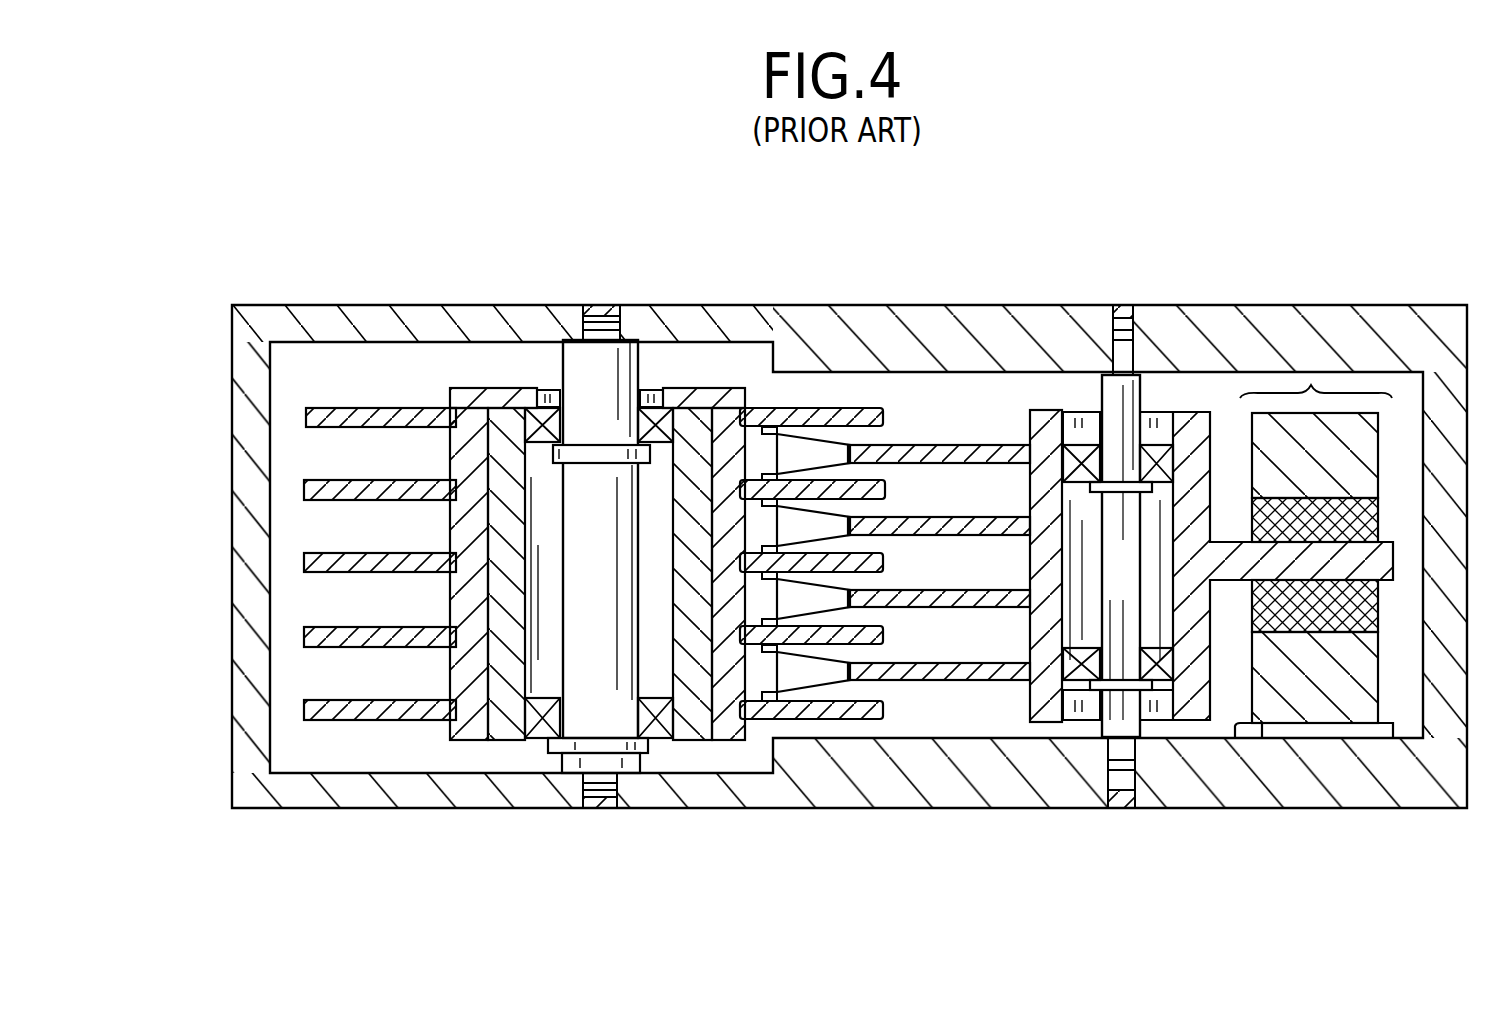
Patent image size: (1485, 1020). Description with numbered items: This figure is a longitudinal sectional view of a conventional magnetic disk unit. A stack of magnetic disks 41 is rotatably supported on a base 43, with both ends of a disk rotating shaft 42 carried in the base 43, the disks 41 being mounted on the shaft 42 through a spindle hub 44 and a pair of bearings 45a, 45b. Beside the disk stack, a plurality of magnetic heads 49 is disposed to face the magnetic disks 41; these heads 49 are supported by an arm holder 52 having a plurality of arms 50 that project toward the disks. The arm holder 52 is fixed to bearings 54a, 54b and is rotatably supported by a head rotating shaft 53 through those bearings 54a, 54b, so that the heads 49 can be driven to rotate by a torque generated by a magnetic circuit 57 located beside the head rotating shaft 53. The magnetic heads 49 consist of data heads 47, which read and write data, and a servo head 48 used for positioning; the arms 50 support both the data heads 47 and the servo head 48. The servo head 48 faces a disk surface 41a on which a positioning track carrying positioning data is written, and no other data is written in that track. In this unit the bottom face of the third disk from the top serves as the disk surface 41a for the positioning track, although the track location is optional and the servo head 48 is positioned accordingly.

The magnetic disks 41 is at (344, 405).
The disk surface 41a is at (880, 582).
The disk rotating shaft 42 is at (558, 392).
The base 43 is at (367, 808).
The spindle hub 44 is at (508, 735).
The bearing 45a is at (652, 408).
The bearing 45b is at (657, 738).
The data heads 47 is at (772, 700).
The servo heads 48 is at (775, 577).
The magnetic heads 49 is at (793, 408).
The arms 50 is at (973, 445).
The arm holder 52 is at (1050, 412).
The head rotating shaft 53 is at (1110, 703).
The bearing 54a is at (1162, 445).
The bearing 54b is at (1157, 697).
The magnetic circuit 57 is at (1318, 388).